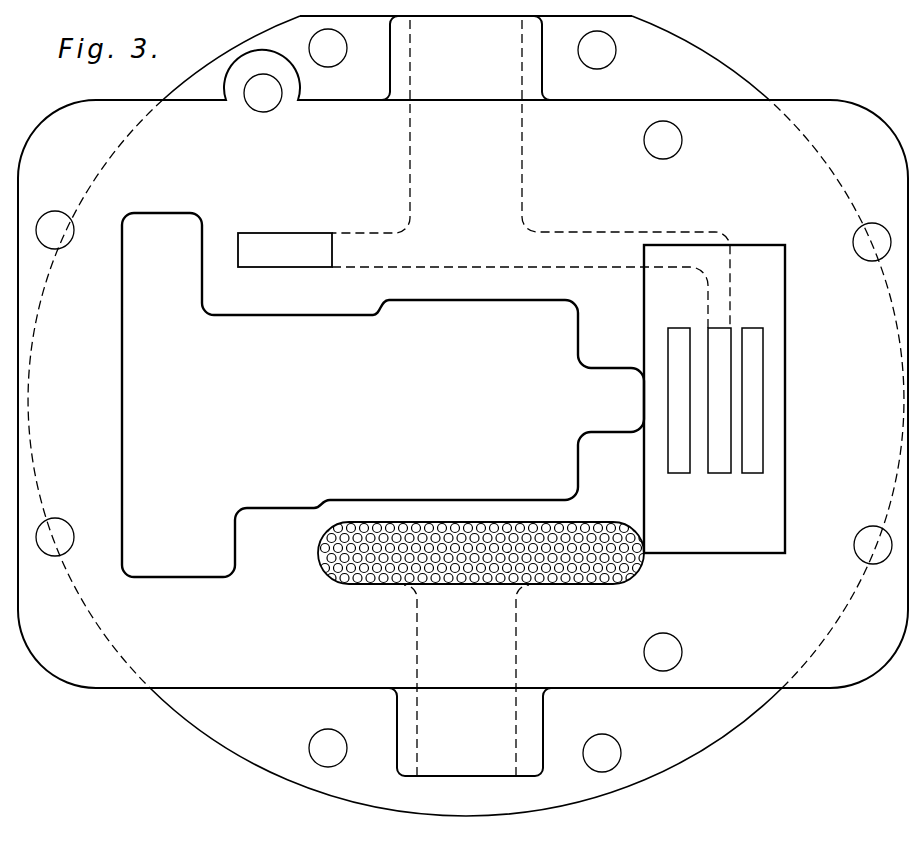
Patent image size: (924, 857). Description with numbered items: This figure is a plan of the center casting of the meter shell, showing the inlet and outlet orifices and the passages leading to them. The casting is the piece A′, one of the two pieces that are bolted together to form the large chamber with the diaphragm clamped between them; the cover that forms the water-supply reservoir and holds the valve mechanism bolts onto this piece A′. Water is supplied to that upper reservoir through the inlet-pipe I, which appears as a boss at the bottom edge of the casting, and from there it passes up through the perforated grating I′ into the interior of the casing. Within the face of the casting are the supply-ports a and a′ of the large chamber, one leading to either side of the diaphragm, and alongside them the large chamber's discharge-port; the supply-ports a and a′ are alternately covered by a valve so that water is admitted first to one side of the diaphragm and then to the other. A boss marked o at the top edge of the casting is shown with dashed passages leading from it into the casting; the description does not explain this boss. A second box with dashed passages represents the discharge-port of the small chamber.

The piece of the large chamber A′ is at (463, 416).
The top boss passage o is at (515, 172).
The inlet-pipe I is at (470, 680).
The grating I′ is at (483, 569).
The supply-port a′ is at (679, 400).
The supply-port a is at (752, 400).